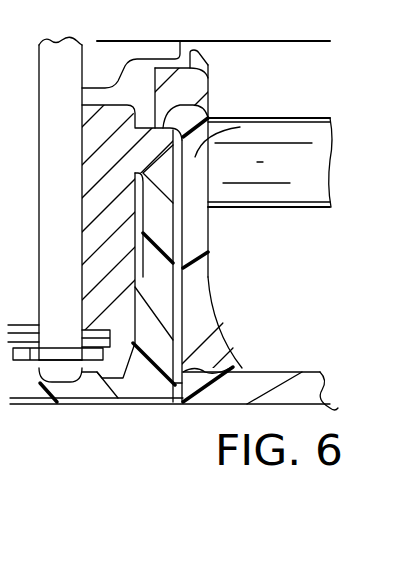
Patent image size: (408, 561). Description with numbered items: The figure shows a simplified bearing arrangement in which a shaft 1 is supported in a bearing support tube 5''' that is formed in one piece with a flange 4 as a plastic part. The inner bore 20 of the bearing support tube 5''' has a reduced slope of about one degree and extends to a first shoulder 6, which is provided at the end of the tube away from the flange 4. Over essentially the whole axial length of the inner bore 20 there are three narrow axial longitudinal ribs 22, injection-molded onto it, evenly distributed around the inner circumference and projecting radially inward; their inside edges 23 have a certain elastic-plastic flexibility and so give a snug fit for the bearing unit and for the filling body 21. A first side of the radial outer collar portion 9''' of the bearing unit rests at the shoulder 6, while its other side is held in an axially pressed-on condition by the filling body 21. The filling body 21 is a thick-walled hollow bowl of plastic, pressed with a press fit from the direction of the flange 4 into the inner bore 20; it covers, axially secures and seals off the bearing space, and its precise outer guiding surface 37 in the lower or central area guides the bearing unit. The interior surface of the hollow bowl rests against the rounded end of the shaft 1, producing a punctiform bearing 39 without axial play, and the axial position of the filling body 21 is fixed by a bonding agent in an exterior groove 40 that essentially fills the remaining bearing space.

The shaft 1 is at (78, 51).
The flange 4 is at (320, 396).
The bearing support tube 5''' is at (220, 177).
The shoulder 6 is at (209, 112).
The radial outer collar portion 9''' is at (215, 111).
The inner bore 20 is at (183, 340).
The filling body 21 is at (208, 254).
The ribs 22 is at (120, 295).
The inside edges 23 is at (183, 222).
The outer guiding surface 37 is at (235, 368).
The punctiform bearing 39 is at (63, 387).
The exterior groove 40 is at (182, 407).